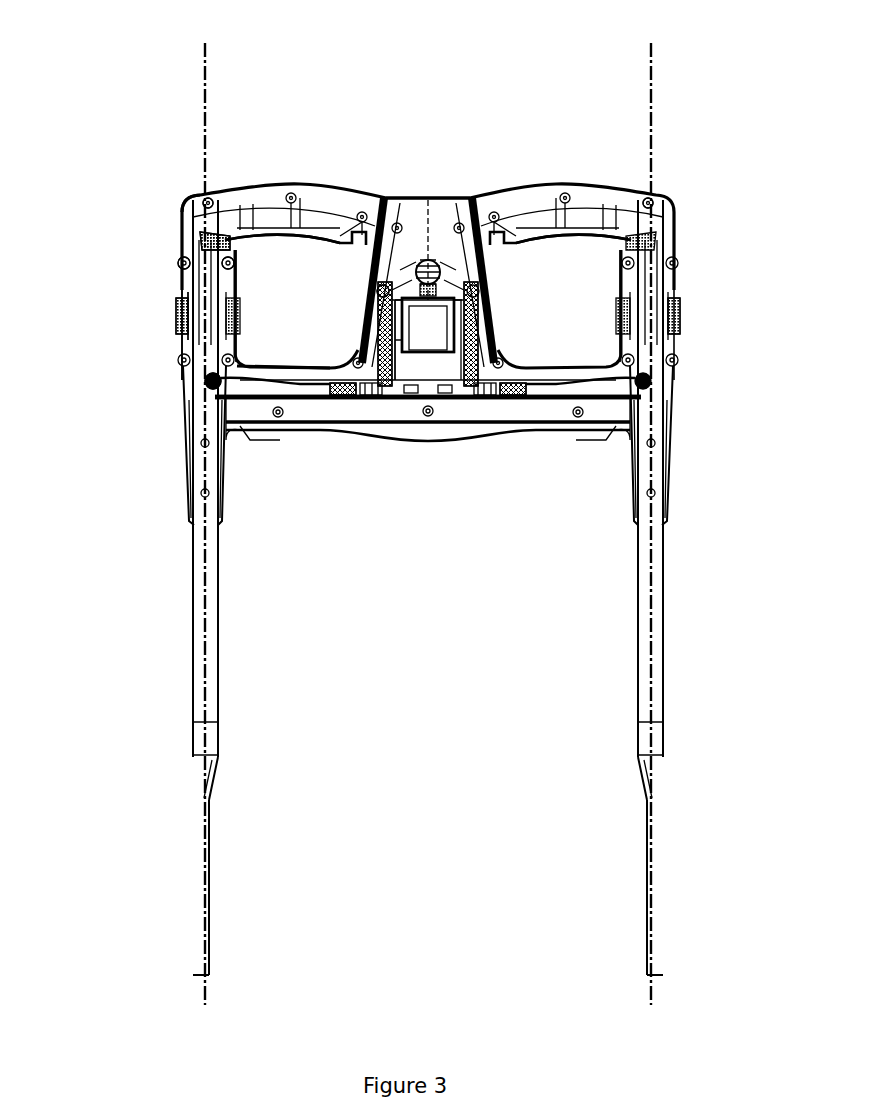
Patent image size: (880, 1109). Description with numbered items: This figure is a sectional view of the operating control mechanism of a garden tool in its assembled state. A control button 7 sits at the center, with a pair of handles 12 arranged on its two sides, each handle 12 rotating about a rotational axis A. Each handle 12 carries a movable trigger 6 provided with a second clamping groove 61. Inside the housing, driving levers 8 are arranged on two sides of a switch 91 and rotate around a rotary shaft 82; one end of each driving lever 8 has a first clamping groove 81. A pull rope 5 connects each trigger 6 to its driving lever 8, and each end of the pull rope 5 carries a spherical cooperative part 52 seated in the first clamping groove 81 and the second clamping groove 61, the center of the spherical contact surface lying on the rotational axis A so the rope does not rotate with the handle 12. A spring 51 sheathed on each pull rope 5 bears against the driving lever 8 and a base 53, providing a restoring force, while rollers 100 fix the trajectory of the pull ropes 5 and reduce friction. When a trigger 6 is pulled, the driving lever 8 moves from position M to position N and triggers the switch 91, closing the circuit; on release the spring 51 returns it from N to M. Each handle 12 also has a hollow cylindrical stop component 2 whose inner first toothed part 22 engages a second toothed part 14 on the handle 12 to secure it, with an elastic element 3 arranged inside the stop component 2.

The rotational axis A is at (205, 88).
The stop component 2 is at (178, 313).
The elastic element 3 is at (178, 336).
The pull rope 5 is at (273, 400).
The trigger 6 is at (260, 247).
The control button 7 is at (438, 245).
The driving lever 8 is at (393, 400).
The handle 12 is at (191, 199).
The second toothed part 14 is at (183, 299).
The first toothed part 22 is at (183, 294).
The spring 51 is at (340, 400).
The cooperative part 52 is at (219, 197).
The base 53 is at (317, 372).
The second clamping groove 61 is at (200, 238).
The first clamping groove 81 is at (466, 400).
The rotary shaft 82 is at (396, 200).
The switch 91 is at (429, 416).
The roller 100 is at (205, 391).
The position M is at (378, 288).
The position N is at (381, 328).